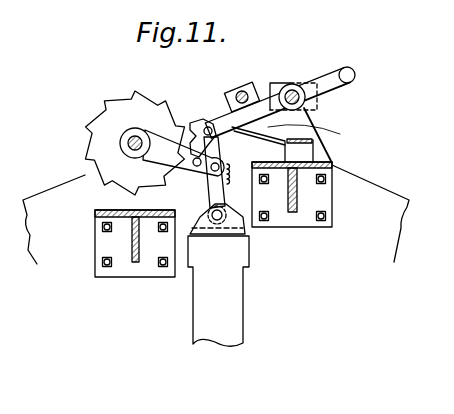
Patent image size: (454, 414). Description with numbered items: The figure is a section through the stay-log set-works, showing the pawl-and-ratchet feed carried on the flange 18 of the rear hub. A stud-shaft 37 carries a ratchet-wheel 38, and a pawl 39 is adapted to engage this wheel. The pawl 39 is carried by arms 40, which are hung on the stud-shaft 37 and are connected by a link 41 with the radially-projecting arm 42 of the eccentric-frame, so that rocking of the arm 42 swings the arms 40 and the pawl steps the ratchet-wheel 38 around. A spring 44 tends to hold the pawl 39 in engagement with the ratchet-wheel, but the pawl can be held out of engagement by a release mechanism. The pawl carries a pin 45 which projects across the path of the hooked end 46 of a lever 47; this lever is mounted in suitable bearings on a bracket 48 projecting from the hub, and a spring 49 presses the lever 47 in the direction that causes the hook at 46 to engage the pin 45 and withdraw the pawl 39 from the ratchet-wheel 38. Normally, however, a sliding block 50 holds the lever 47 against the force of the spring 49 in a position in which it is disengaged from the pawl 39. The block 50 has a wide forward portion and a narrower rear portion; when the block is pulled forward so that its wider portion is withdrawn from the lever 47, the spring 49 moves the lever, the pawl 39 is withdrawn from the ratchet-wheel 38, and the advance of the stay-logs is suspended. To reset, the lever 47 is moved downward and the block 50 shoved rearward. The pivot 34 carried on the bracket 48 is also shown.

The flange of the rear hub 18 is at (216, 221).
The pivot shaft 34 is at (294, 93).
The stud-shaft 37 is at (119, 143).
The ratchet-wheel 38 is at (135, 143).
The pawl 39 is at (206, 124).
The arms 40 is at (164, 158).
The link 41 is at (222, 198).
The radially-projecting arm 42 is at (218, 291).
The spring 44 is at (228, 149).
The pin 45 is at (209, 130).
The hooked end 46 is at (198, 171).
The lever 47 is at (330, 88).
The bracket 48 is at (318, 193).
The spring 49 is at (315, 132).
The sliding block 50 is at (247, 90).